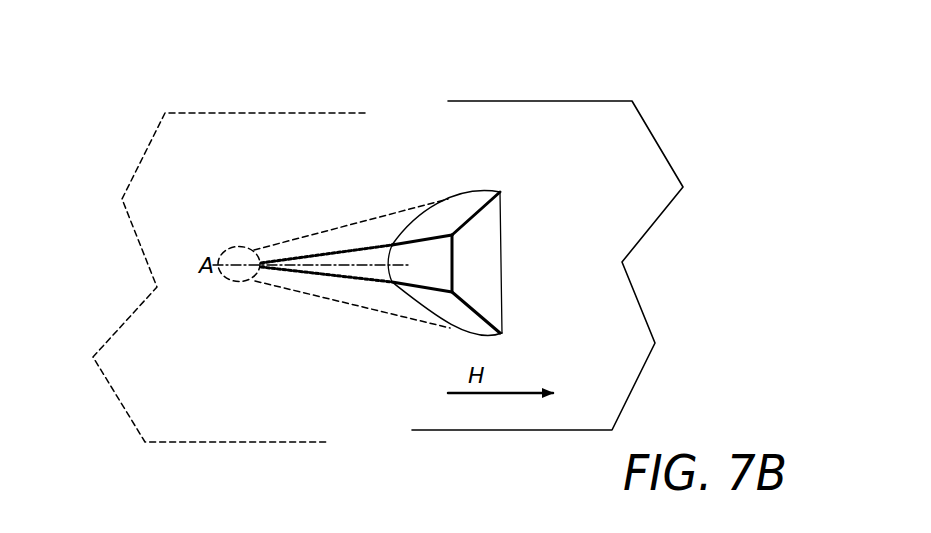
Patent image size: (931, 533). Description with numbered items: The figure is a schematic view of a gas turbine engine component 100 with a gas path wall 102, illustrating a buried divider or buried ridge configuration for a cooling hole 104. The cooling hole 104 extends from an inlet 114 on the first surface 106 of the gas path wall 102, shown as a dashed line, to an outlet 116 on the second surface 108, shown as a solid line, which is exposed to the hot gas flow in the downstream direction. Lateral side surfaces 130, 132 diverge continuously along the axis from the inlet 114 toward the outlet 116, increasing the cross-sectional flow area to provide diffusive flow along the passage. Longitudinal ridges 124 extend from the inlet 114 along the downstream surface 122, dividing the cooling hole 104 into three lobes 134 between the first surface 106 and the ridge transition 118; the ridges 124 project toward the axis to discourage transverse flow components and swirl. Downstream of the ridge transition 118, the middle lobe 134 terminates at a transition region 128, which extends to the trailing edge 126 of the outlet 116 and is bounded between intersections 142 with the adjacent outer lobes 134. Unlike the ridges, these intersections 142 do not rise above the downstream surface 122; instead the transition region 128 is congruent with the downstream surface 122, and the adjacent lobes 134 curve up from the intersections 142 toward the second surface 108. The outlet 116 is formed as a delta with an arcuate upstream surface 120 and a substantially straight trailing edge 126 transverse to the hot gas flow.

The gas turbine engine component 100 is at (178, 73).
The gas path wall 102 is at (352, 422).
The cooling hole 104 is at (265, 348).
The first surface 106 is at (137, 170).
The second surface 108 is at (663, 152).
The inlet 114 is at (232, 247).
The outlet 116 is at (472, 187).
The ridge transition 118 is at (452, 235).
The upstream surface 120 is at (394, 237).
The downstream surface 122 is at (407, 273).
The longitudinal ridges 124 is at (348, 251).
The trailing edge 126 is at (502, 227).
The transition region 128 is at (492, 273).
The side surface 130 is at (280, 242).
The side surface 132 is at (340, 304).
The lobes 134 is at (480, 198).
The intersections 142 is at (467, 305).